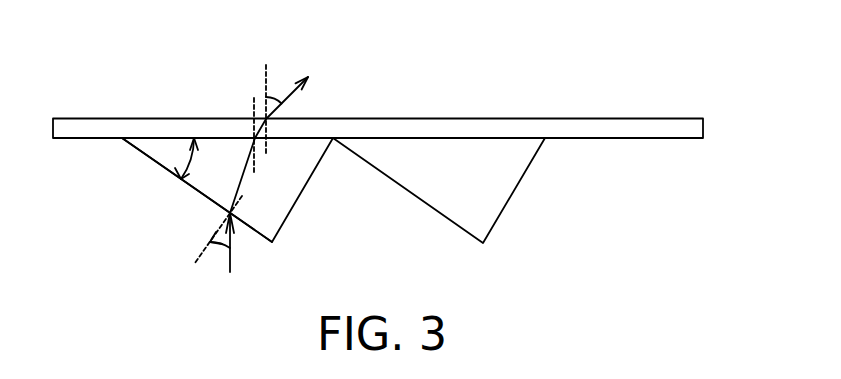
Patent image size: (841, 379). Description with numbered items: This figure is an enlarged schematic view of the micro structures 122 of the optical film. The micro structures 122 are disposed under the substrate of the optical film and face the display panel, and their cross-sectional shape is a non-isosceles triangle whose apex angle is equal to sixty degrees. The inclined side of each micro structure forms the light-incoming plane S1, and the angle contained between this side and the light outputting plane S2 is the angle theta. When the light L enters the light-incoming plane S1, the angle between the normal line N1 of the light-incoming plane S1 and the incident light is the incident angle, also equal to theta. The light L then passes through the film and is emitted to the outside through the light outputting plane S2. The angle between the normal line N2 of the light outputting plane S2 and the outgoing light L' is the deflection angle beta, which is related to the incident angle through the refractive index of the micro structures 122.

The light outputting plane S2 is at (169, 118).
The light-incoming plane S1 is at (156, 163).
The micro structures 122 is at (423, 201).
The light L is at (253, 199).
The outgoing light L' is at (308, 88).
The normal line of the light-incident plane N1 is at (207, 243).
The normal line of the light outputting plane N2 is at (266, 78).